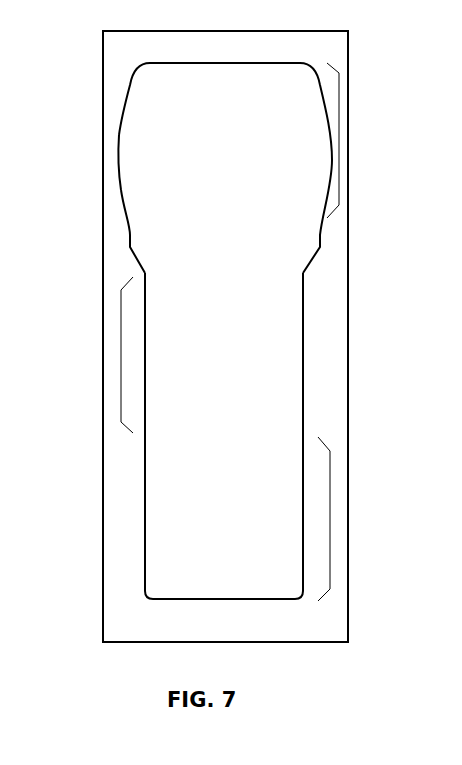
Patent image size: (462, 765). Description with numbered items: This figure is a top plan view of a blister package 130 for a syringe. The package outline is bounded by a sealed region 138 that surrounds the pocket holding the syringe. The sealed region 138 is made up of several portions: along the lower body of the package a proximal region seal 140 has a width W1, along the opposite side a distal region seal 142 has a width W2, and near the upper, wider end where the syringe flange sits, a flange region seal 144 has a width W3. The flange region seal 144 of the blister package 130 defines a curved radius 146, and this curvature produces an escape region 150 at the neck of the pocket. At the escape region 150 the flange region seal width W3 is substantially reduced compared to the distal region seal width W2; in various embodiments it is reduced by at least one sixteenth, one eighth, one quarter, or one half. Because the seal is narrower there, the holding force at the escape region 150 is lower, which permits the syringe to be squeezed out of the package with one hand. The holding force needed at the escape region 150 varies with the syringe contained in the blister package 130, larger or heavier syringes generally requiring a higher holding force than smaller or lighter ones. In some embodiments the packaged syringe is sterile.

The blister package 130 is at (72, 298).
The sealed region 138 is at (158, 600).
The proximal region seal 140 is at (121, 362).
The distal region seal 142 is at (330, 497).
The flange region seal 144 is at (339, 127).
The curved radius 146 is at (123, 112).
The escape region 150 is at (118, 162).
The proximal region seal width W1 is at (77, 329).
The distal region seal width W2 is at (280, 557).
The flange region seal width W3 is at (375, 162).